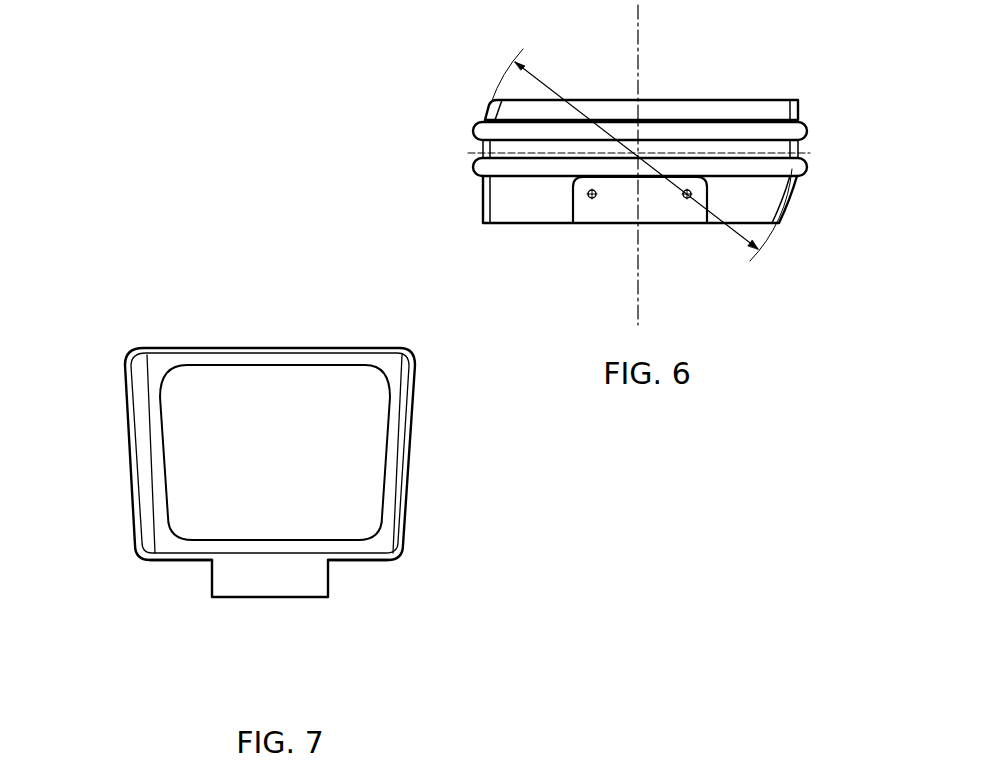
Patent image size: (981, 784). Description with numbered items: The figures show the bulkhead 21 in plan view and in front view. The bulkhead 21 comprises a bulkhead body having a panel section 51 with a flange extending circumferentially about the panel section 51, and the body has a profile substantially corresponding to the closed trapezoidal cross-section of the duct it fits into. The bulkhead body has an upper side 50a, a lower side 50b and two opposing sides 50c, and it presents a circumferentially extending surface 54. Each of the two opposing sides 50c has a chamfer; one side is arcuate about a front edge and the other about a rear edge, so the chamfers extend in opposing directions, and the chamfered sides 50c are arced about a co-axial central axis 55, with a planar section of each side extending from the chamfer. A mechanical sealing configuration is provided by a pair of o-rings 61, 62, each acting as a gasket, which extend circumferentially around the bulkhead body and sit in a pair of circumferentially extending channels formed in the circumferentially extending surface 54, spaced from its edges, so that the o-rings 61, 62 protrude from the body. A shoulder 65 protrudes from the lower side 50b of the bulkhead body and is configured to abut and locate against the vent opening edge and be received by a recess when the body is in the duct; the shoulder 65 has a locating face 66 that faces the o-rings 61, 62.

In FIG. 7, the bulkhead 21 is at (118, 307).
In FIG. 7, the upper side 50a is at (327, 345).
In FIG. 6, the lower side 50b is at (527, 207).
In FIG. 7, the lower side 50b is at (360, 560).
In FIG. 6, the opposing sides 50c is at (798, 110).
In FIG. 7, the opposing sides 50c is at (128, 428).
In FIG. 7, the panel section 51 is at (367, 400).
In FIG. 7, the circumferentially extending surface 54 is at (413, 417).
In FIG. 6, the central axis 55 is at (640, 152).
In FIG. 6, the o-ring 61 is at (807, 168).
In FIG. 7, the o-ring 61 is at (135, 477).
In FIG. 6, the o-ring 62 is at (807, 132).
In FIG. 6, the shoulder 65 is at (660, 210).
In FIG. 7, the shoulder 65 is at (300, 587).
In FIG. 6, the locating face 66 is at (708, 184).